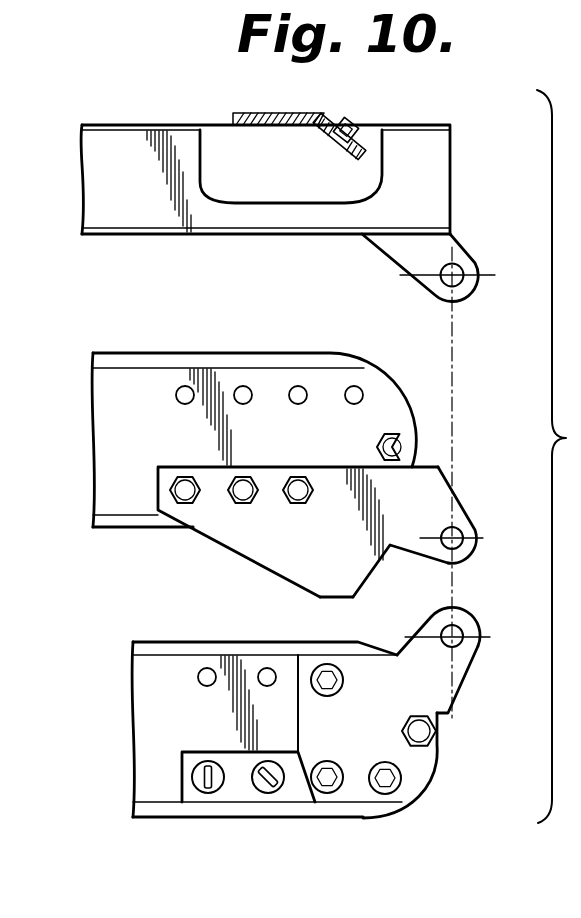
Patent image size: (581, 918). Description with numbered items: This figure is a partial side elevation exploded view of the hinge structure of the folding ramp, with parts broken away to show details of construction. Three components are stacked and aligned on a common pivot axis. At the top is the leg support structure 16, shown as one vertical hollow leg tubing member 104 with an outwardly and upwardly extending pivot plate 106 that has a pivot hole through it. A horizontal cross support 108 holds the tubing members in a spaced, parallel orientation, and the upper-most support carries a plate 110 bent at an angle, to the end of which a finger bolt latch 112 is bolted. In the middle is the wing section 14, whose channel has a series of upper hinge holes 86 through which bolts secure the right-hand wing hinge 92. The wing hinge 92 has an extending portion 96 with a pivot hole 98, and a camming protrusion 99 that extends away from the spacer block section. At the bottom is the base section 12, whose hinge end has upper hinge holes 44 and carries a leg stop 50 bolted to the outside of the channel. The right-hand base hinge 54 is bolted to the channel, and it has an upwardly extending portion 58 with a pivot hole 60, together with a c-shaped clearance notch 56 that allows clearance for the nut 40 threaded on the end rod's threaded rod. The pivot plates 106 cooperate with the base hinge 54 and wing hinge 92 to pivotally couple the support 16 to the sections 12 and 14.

The base section 12 is at (183, 640).
The wing section 14 is at (167, 352).
The leg support structure 16 is at (450, 173).
The nut 40 is at (437, 738).
The upper hinge holes 44 is at (200, 682).
The leg stop 50 is at (225, 797).
The right-hand base hinge 54 is at (461, 686).
The c-shaped clearance notch 56 is at (405, 733).
The upwardly extending portion 58 is at (478, 650).
The pivot hole 60 is at (463, 636).
The upper hinge holes 86 is at (186, 404).
The right-hand wing hinge 92 is at (423, 477).
The extending portion 96 is at (461, 507).
The pivot hole 98 is at (463, 547).
The camming protrusion 99 is at (340, 598).
The leg tubing member 104 is at (219, 226).
The pivot plate 106 is at (397, 252).
The horizontal cross support 108 is at (278, 114).
The plate 110 is at (348, 144).
The finger bolt latch 112 is at (338, 127).